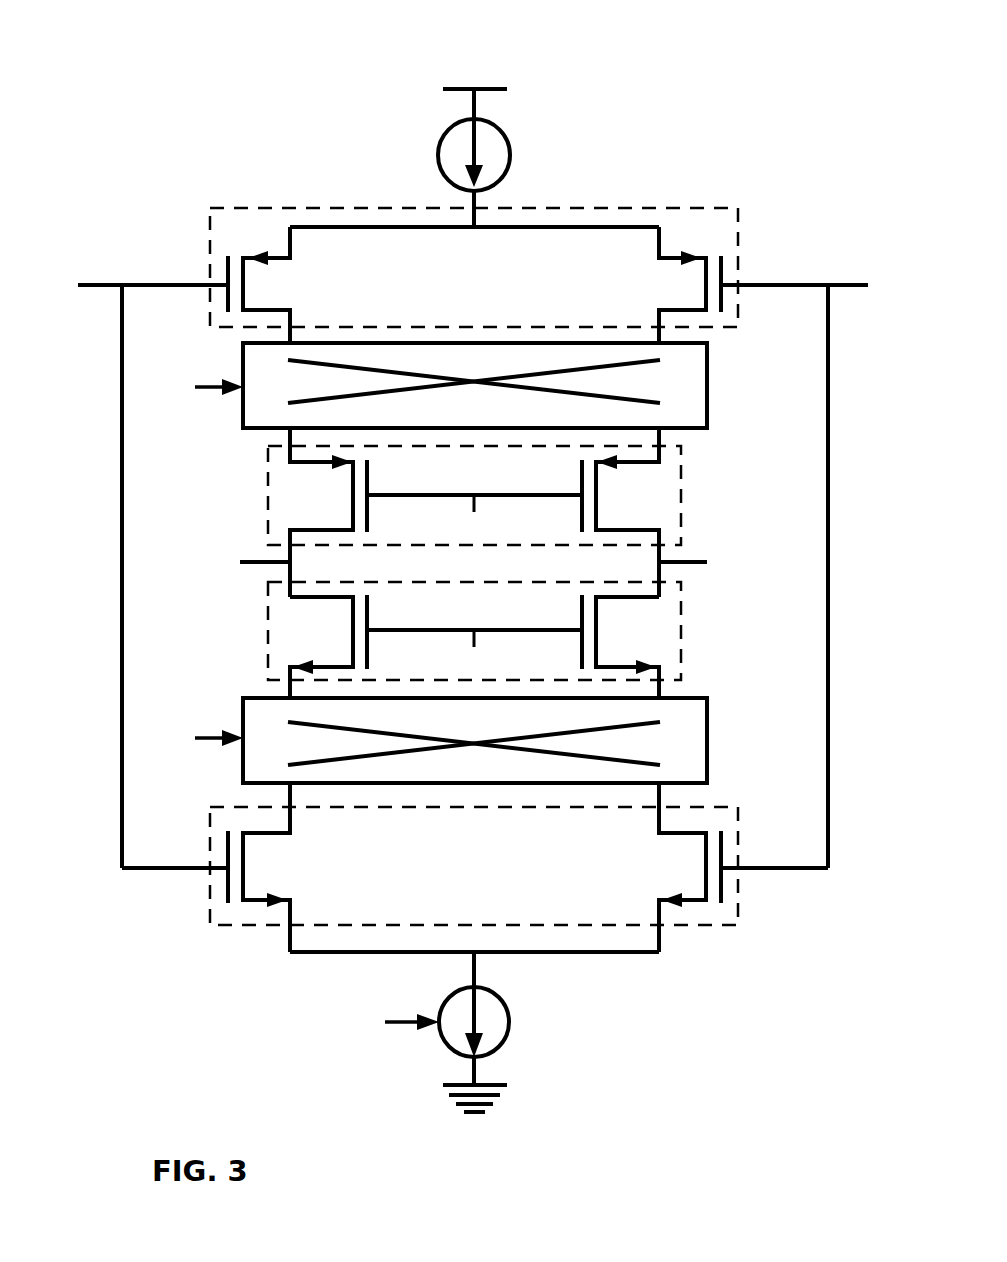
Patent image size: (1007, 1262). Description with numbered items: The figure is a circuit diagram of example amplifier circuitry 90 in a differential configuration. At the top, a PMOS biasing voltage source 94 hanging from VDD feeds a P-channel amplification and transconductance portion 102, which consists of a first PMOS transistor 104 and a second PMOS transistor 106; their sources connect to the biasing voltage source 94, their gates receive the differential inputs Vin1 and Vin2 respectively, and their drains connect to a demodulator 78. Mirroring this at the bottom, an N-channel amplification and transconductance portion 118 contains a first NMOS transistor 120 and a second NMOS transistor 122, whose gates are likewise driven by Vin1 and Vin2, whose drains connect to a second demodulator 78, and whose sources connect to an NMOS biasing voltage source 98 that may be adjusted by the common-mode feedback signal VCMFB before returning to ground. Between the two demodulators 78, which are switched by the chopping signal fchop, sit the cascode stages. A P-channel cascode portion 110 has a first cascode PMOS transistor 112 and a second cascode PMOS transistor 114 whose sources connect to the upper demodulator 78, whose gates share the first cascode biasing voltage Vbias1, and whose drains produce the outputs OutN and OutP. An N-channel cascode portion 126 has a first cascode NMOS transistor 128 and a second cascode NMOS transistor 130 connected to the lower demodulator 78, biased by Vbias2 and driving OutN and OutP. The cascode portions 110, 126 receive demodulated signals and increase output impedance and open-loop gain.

The amplifier circuitry 90 is at (731, 34).
The PMOS biasing voltage source 94 is at (532, 114).
The NMOS biasing voltage source 98 is at (524, 1054).
The P-channel amplification and transconductance portion 102 is at (740, 327).
The first PMOS transistor 104 is at (290, 278).
The second PMOS transistor 106 is at (659, 275).
The demodulator 78 is at (708, 385).
The P-channel cascode portion 110 is at (683, 465).
The first cascode PMOS transistor 112 is at (290, 497).
The second cascode PMOS transistor 114 is at (659, 497).
The N-channel cascode portion 126 is at (683, 625).
The first cascode NMOS transistor 128 is at (290, 632).
The second cascode NMOS transistor 130 is at (659, 642).
The N-channel amplification and transconductance portion 118 is at (705, 927).
The first NMOS transistor 120 is at (297, 868).
The second NMOS transistor 122 is at (655, 868).